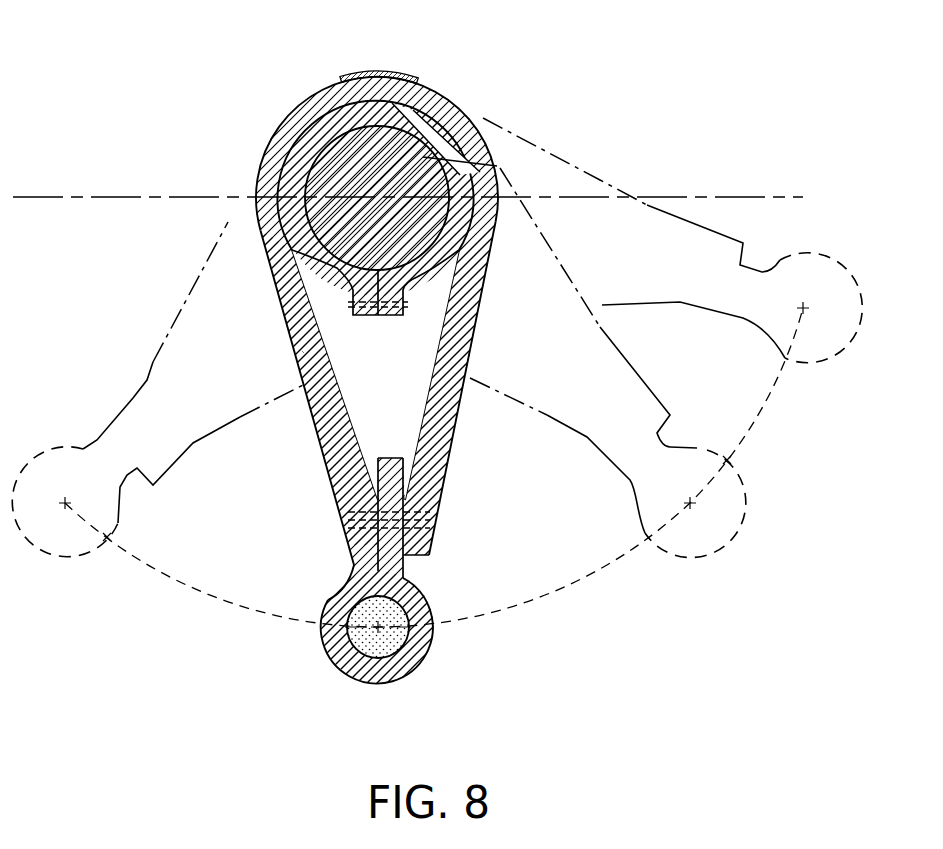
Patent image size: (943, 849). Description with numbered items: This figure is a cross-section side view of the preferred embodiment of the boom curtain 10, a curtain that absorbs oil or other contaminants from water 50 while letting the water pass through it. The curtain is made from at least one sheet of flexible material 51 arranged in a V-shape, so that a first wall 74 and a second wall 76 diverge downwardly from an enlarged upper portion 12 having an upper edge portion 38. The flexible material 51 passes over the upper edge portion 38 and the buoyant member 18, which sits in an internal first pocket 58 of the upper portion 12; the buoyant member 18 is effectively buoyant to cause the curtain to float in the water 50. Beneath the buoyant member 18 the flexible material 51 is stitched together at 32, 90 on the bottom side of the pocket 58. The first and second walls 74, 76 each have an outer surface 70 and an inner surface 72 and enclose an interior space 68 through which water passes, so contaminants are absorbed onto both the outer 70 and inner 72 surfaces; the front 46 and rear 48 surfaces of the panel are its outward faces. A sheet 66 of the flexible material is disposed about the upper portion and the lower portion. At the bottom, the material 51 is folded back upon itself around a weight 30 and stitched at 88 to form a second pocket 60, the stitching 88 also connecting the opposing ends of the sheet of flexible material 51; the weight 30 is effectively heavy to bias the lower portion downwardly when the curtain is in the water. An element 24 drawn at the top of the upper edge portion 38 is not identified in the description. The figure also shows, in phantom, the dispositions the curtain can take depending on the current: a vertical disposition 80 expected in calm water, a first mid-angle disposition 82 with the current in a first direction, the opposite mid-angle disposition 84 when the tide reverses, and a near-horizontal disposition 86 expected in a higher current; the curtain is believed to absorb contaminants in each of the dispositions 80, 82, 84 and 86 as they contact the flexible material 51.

The boom curtain 10 is at (321, 374).
The upper portion 12 is at (254, 171).
The buoyant member 18 is at (458, 172).
The pad 24 is at (378, 74).
The weight 30 is at (379, 643).
The stitching 32 is at (375, 416).
The upper edge portion 38 is at (317, 86).
The front surface 46 is at (470, 355).
The rear surface 48 is at (302, 351).
The water 50 is at (735, 197).
The sheet of flexible material 51 is at (415, 123).
The first pocket 58 is at (497, 166).
The second pocket 60 is at (410, 657).
The sheet of flexible material 66 is at (425, 556).
The interior space 68 is at (396, 368).
The outer surface 70 is at (337, 446).
The inner surface 72 is at (427, 407).
The first wall 74 is at (488, 388).
The second wall 76 is at (309, 388).
The vertical disposition 80 is at (348, 680).
The first mid-angle disposition 82 is at (691, 561).
The second mid-angle disposition 84 is at (67, 558).
The near horizontal disposition 86 is at (814, 369).
The stitching 88 is at (449, 521).
The stitching 90 is at (324, 312).